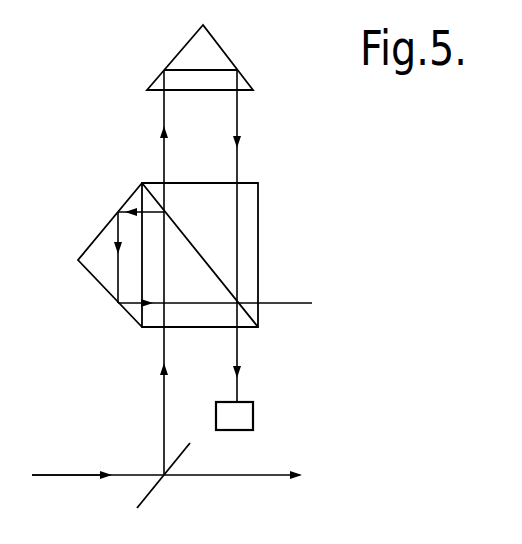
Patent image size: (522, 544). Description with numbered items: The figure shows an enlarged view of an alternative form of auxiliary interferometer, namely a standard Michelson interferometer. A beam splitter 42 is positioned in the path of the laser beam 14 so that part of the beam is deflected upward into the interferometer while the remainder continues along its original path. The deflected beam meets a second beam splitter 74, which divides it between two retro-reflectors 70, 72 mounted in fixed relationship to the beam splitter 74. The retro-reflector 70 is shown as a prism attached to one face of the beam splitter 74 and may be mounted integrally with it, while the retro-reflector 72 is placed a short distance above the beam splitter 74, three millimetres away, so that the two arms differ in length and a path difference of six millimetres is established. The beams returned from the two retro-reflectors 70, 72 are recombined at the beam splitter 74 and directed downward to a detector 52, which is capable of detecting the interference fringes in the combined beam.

The laser beam 14 is at (43, 474).
The beam splitter 42 is at (143, 497).
The detector 52 is at (246, 418).
The retro-reflector 70 is at (101, 231).
The retro-reflector 72 is at (227, 50).
The beam splitter 74 is at (250, 258).